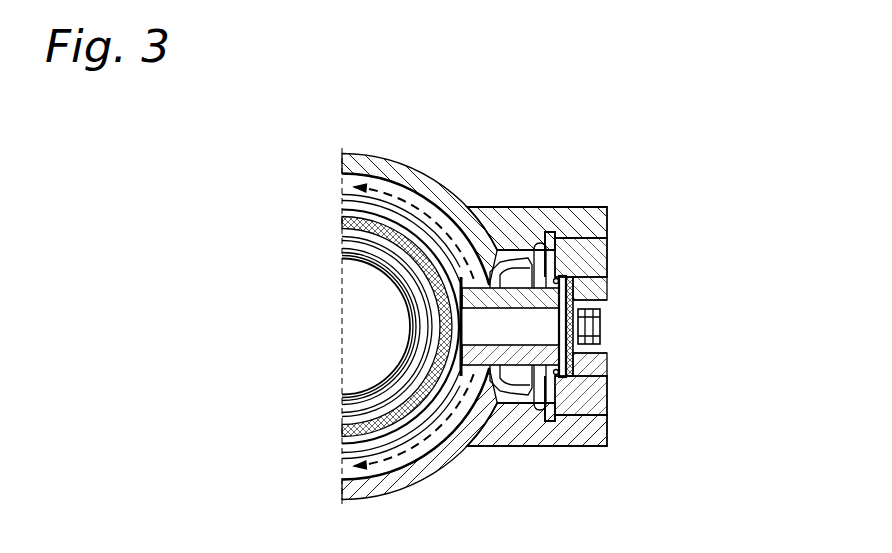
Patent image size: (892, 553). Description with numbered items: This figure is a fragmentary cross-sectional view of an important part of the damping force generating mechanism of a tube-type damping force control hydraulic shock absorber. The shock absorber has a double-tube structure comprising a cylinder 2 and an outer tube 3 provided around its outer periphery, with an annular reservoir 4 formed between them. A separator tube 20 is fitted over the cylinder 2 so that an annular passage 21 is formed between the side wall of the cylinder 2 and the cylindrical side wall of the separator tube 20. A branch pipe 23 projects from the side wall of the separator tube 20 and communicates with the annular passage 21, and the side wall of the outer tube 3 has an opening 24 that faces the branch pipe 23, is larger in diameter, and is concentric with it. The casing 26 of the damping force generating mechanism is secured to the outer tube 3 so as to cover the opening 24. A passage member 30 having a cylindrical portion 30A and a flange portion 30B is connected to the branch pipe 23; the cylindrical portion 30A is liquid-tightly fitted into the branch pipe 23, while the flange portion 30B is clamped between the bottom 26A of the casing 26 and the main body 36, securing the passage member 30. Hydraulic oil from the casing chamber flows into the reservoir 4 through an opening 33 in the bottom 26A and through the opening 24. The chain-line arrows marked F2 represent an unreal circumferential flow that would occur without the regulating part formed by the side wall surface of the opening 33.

The cylinder 2 is at (341, 224).
The outer tube 3 is at (343, 157).
The reservoir 4 is at (343, 183).
The separator tube 20 is at (343, 200).
The annular passage 21 is at (343, 213).
The branch pipe 23 is at (488, 268).
The opening 24 is at (520, 265).
The casing 26 is at (607, 212).
The bottom of the casing 26A is at (608, 243).
The passage member 30 is at (498, 350).
The cylindrical portion 30A is at (455, 333).
The flange portion 30B is at (580, 397).
The opening 33 is at (608, 292).
The main body 36 is at (578, 410).
The flow F2 is at (430, 165).